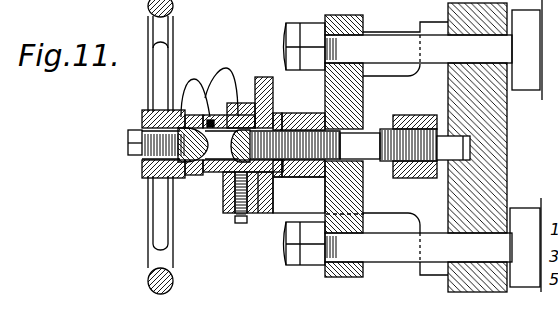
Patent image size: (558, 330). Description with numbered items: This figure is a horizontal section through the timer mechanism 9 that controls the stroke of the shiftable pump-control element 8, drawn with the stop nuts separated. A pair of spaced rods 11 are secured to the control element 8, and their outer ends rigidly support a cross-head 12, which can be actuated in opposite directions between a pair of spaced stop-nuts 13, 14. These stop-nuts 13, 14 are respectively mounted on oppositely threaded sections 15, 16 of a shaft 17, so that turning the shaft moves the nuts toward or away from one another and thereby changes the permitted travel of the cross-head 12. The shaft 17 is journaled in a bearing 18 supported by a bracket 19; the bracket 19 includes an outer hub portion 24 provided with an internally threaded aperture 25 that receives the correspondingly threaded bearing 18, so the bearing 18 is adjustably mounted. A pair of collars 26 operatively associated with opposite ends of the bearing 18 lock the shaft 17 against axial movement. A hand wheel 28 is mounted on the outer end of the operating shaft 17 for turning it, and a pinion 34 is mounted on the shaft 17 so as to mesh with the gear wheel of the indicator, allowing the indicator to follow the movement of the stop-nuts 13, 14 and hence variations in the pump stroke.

The shiftable control element 8 is at (520, 208).
The timer mechanism 9 is at (238, 91).
The spaced rods 11 is at (398, 148).
The cross-head 12 is at (335, 279).
The stop-nut 13 is at (300, 178).
The stop-nut 14 is at (398, 179).
The threaded section 15 is at (307, 127).
The threaded section 16 is at (413, 128).
The shaft 17 is at (360, 146).
The bearing 18 is at (195, 98).
The bracket 19 is at (221, 85).
The outer hub portion 24 is at (223, 178).
The internally threaded aperture 25 is at (257, 214).
The collars 26 is at (146, 112).
The hand wheel 28 is at (147, 206).
The pinion 34 is at (196, 79).